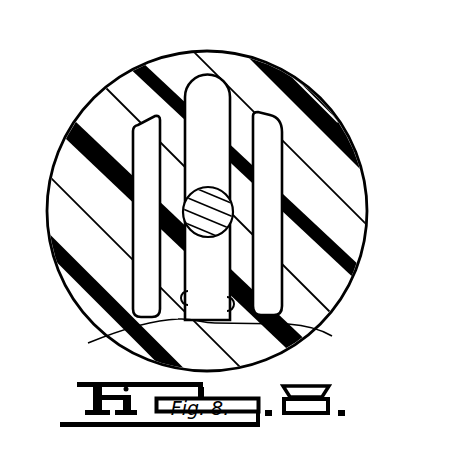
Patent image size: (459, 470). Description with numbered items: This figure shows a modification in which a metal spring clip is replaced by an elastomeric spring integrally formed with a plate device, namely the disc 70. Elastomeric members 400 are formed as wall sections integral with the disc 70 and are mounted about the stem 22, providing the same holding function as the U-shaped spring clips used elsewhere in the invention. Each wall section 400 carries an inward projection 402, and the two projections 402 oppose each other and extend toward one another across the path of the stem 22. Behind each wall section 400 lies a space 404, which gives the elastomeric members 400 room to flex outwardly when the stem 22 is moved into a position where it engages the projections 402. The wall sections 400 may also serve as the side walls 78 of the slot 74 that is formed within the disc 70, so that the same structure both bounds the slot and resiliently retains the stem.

The stem 22 is at (209, 201).
The disc 70 is at (307, 137).
The slot 74 is at (213, 90).
The side walls 78 is at (208, 339).
The elastomeric members 400 is at (240, 129).
The inward projections 402 is at (215, 237).
The space 404 is at (147, 258).